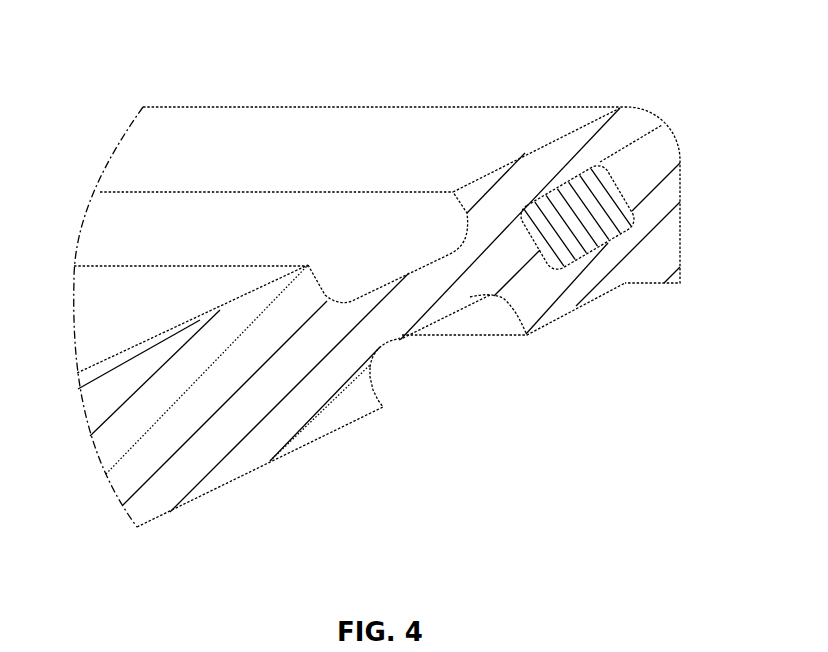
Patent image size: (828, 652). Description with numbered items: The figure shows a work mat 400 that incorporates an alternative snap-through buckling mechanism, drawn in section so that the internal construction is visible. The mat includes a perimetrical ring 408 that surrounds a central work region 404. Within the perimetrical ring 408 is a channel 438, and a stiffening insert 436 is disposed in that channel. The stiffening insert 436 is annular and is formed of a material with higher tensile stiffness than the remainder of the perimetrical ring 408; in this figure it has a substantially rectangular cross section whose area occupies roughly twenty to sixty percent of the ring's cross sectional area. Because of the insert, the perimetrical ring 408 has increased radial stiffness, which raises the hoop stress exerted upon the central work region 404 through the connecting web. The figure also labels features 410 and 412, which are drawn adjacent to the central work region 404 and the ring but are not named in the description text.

The work mat 400 is at (577, 90).
The central work region 404 is at (222, 468).
The perimetrical ring 408 is at (478, 127).
The projection bump 410 is at (395, 331).
The outer shell (phantom) 412 is at (222, 99).
The stiffening insert 436 is at (572, 235).
The channel 438 is at (545, 240).